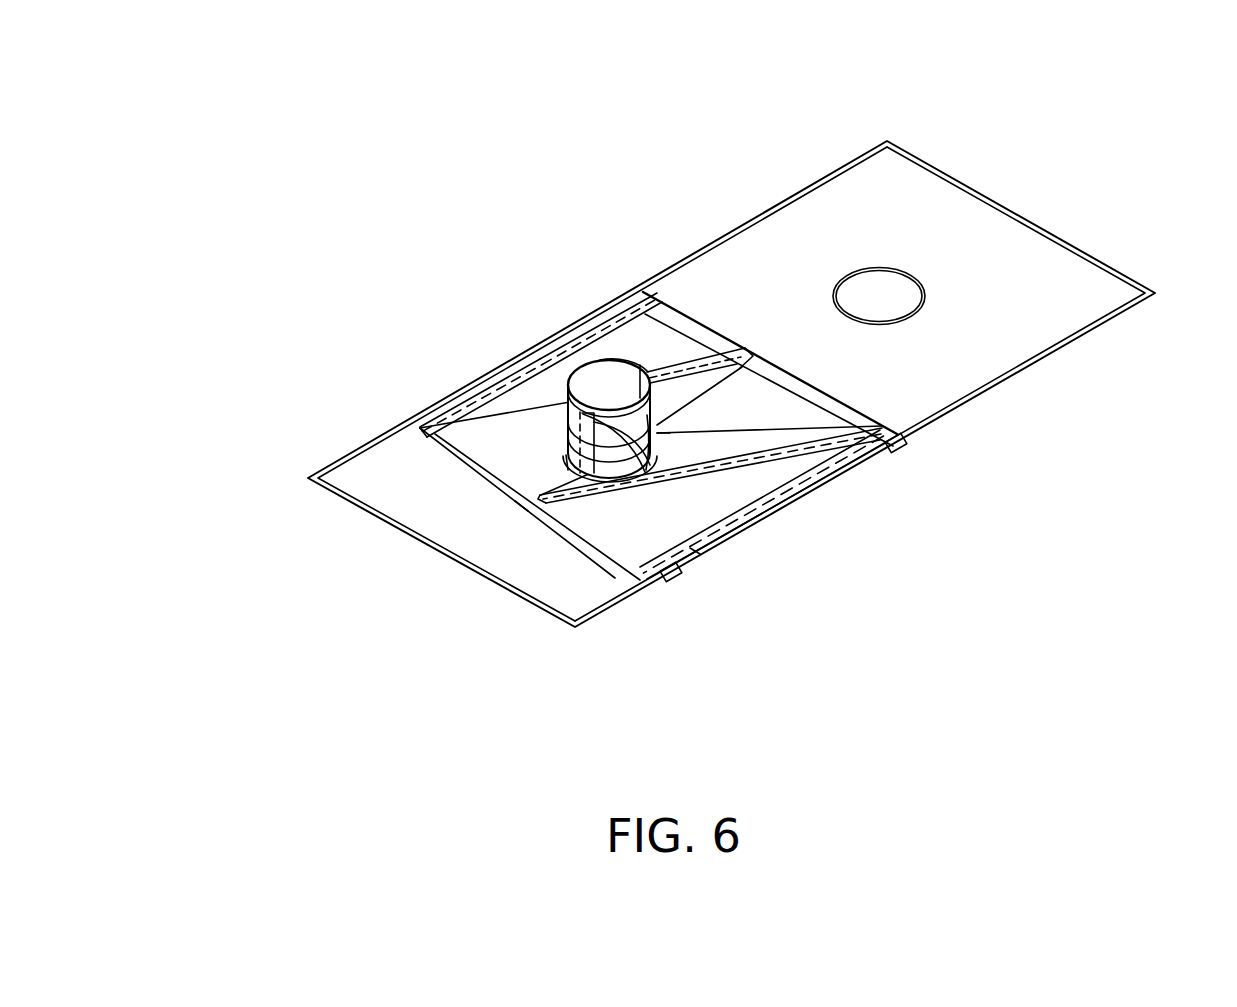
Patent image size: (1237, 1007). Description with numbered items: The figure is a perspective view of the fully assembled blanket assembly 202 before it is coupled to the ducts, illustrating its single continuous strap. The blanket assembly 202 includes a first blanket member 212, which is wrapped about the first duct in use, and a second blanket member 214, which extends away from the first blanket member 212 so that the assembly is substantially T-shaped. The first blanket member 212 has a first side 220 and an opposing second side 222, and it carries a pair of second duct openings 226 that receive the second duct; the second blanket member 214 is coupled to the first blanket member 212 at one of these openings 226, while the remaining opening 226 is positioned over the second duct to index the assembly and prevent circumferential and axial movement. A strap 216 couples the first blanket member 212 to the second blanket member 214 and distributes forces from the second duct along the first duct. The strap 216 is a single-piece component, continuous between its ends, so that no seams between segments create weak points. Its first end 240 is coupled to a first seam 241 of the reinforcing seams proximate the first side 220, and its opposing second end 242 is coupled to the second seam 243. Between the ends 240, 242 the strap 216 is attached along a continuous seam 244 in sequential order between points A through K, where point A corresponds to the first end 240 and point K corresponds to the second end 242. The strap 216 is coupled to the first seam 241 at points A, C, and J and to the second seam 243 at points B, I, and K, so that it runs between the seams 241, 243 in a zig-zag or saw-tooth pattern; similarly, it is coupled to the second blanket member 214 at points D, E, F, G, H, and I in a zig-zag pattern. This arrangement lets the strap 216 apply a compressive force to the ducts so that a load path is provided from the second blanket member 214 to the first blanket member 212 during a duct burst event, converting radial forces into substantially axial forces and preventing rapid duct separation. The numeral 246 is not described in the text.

The blanket assembly 202 is at (333, 160).
The first blanket member 212 is at (1067, 284).
The second blanket member 214 is at (613, 367).
The strap 216 is at (810, 488).
The first side 220 is at (350, 457).
The second side 222 is at (1043, 353).
The second duct openings 226 is at (892, 287).
The first end 240 is at (646, 298).
The first seam 241 is at (841, 403).
The second end 242 is at (648, 589).
The second seam 243 is at (583, 522).
The continuous seam 244 is at (570, 345).
The retainer patch 246 is at (477, 368).
The point A is at (648, 372).
The point B is at (417, 427).
The point C is at (753, 356).
The point D is at (667, 435).
The point E is at (650, 368).
The point F is at (647, 463).
The point G is at (568, 422).
The point H is at (567, 458).
The point I is at (520, 498).
The point J is at (902, 440).
The point K is at (697, 553).